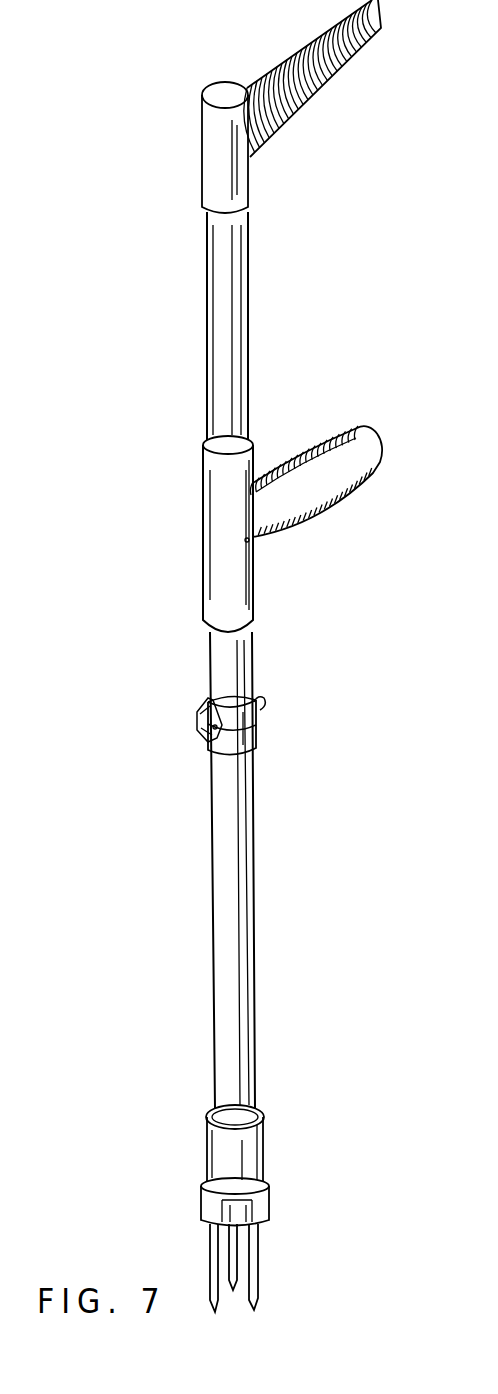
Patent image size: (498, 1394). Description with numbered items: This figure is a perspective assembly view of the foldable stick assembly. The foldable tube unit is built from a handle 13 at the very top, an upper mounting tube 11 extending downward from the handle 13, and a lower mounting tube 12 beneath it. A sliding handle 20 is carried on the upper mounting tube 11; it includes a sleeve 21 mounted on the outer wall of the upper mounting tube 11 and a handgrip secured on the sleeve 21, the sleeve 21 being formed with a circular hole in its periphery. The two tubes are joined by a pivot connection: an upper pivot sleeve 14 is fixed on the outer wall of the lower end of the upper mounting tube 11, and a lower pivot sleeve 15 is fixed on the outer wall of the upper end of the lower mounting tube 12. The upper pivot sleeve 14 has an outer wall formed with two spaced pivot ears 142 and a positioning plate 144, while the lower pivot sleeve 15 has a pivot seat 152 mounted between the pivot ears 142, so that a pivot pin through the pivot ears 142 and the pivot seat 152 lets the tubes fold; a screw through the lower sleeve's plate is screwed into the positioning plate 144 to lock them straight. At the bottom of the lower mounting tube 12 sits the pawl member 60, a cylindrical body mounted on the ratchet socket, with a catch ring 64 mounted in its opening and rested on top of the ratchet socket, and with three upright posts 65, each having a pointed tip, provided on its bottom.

The upper mounting tube 11 is at (207, 262).
The lower mounting tube 12 is at (248, 934).
The handle 13 is at (310, 87).
The upper pivot sleeve 14 is at (240, 720).
The pivot ears 142 is at (203, 705).
The positioning plate 144 is at (258, 703).
The lower pivot sleeve 15 is at (255, 745).
The pivot seat 152 is at (205, 740).
The sliding handle 20 is at (358, 423).
The sleeve 21 is at (207, 522).
The pawl member 60 is at (207, 1146).
The catch ring 64 is at (262, 1106).
The upright posts 65 is at (262, 1235).